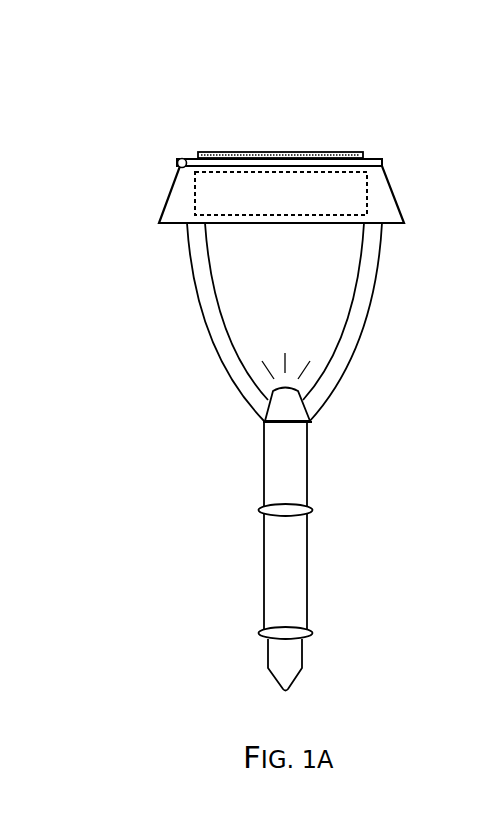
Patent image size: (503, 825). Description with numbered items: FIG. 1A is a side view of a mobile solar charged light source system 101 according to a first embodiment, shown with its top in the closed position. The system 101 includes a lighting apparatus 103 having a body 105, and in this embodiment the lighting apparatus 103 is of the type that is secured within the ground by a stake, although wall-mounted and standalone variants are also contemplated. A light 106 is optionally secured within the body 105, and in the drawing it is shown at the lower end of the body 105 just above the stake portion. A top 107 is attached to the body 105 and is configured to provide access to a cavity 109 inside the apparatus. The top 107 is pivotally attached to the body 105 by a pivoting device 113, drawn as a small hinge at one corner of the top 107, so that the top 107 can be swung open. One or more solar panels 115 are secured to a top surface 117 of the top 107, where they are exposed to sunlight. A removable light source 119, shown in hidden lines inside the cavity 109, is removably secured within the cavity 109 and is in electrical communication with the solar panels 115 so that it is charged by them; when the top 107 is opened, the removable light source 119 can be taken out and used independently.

The system 101 is at (151, 71).
The lighting apparatus 103 is at (412, 363).
The body 105 is at (203, 308).
The light 106 is at (271, 390).
The top 107 is at (382, 162).
The cavity 109 is at (386, 204).
The pivoting device 113 is at (178, 161).
The solar panels 115 is at (322, 152).
The top surface 117 is at (191, 140).
The removable light source 119 is at (195, 195).